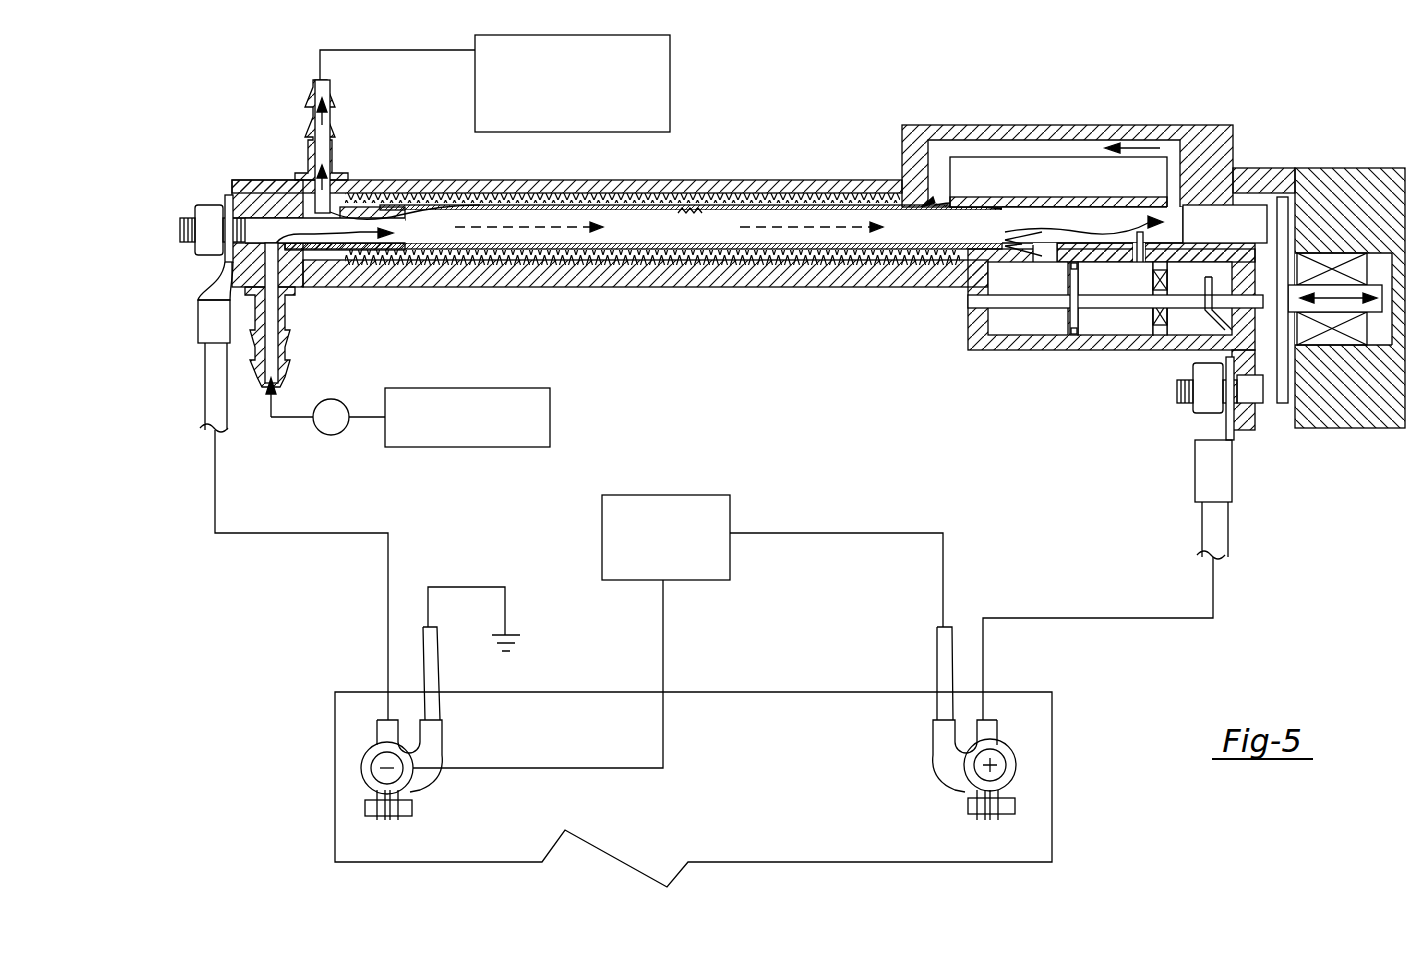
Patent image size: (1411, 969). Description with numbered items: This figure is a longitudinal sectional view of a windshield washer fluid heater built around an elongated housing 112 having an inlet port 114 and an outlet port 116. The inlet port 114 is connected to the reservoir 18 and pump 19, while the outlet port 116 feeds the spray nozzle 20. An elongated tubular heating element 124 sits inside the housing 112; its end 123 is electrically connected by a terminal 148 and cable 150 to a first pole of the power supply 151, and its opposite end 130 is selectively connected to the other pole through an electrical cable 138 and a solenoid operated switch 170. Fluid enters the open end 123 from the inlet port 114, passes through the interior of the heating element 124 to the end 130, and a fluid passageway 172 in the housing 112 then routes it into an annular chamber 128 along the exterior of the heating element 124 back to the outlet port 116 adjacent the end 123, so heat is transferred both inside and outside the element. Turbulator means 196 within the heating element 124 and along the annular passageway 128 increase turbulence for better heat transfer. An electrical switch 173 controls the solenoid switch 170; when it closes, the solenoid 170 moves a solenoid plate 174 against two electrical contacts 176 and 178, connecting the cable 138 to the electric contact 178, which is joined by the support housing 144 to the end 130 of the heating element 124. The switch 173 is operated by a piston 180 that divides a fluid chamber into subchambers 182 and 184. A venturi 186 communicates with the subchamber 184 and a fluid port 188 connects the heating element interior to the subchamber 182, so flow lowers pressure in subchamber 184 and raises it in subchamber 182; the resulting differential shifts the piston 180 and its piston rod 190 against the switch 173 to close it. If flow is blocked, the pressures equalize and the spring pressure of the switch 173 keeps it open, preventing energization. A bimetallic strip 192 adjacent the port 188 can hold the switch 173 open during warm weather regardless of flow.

The reservoir 18 is at (551, 413).
The pump 19 is at (336, 436).
The spray nozzle 20 is at (670, 80).
The housing 112 is at (798, 178).
The inlet port 114 is at (296, 352).
The outlet port 116 is at (306, 90).
The end of heating element 123 is at (358, 216).
The heating element 124 is at (722, 249).
The annular chamber 128 is at (640, 265).
The opposite end of heating element 130 is at (1010, 230).
The electrical cable 138 is at (1230, 527).
The support housing 144 is at (1173, 212).
The terminal 148 is at (185, 229).
The cable 150 is at (213, 392).
The power supply 151 is at (727, 780).
The solenoid operated switch 170 is at (1360, 168).
The fluid passageway 172 is at (1150, 148).
The electrical switch 173 is at (1200, 312).
The solenoid plate 174 is at (1283, 197).
The electrical contact 176 is at (1262, 395).
The electric contact 178 is at (1245, 205).
The piston 180 is at (1062, 310).
The subchamber 182 is at (975, 322).
The subchamber 184 is at (1115, 318).
The venturi 186 is at (1135, 243).
The fluid port 188 is at (1046, 255).
The piston rod 190 is at (1022, 290).
The bimetallic strip 192 is at (1032, 238).
The turbulator means 196 is at (688, 210).